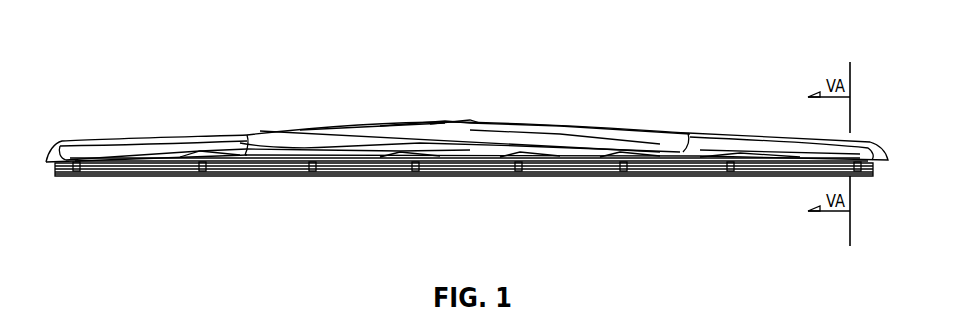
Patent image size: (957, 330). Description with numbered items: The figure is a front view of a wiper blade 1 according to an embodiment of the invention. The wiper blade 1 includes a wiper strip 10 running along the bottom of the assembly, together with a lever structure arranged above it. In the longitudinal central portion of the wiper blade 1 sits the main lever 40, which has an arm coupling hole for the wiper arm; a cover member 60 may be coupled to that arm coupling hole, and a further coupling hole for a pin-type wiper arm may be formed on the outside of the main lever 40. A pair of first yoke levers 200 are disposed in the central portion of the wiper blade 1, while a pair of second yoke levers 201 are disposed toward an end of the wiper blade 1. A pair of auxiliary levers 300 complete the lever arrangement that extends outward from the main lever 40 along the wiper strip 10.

The wiper blade 1 is at (757, 48).
The wiper strip 10 is at (231, 177).
The main lever 40 is at (323, 128).
The cover member 60 is at (445, 116).
The first yoke levers 200 is at (392, 159).
The second yoke levers 201 is at (195, 162).
The auxiliary levers 300 is at (148, 133).